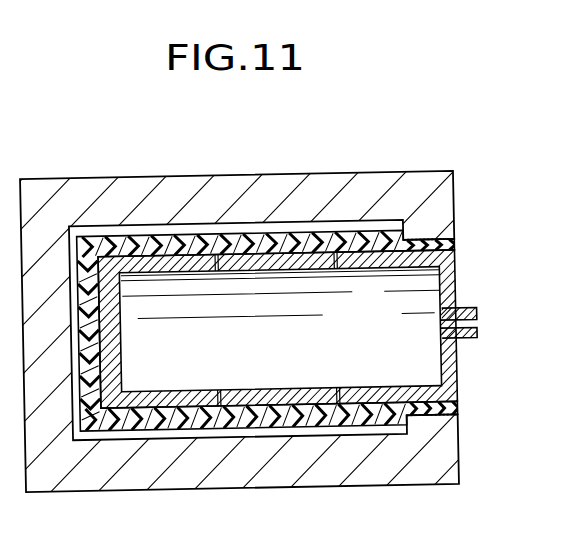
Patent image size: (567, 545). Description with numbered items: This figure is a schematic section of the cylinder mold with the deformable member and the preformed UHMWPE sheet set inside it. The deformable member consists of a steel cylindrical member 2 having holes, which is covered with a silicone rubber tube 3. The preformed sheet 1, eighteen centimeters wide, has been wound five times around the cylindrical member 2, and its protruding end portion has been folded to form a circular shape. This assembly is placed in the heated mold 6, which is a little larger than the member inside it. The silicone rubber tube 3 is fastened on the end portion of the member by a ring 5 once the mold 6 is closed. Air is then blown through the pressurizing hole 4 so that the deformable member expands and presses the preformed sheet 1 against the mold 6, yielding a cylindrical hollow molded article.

The preformed sheet 1 is at (158, 238).
The cylindrical member 2 is at (447, 279).
The silicone rubber tube 3 is at (264, 250).
The pressurizing hole 4 is at (477, 322).
The ring 5 is at (427, 414).
The mold 6 is at (401, 186).